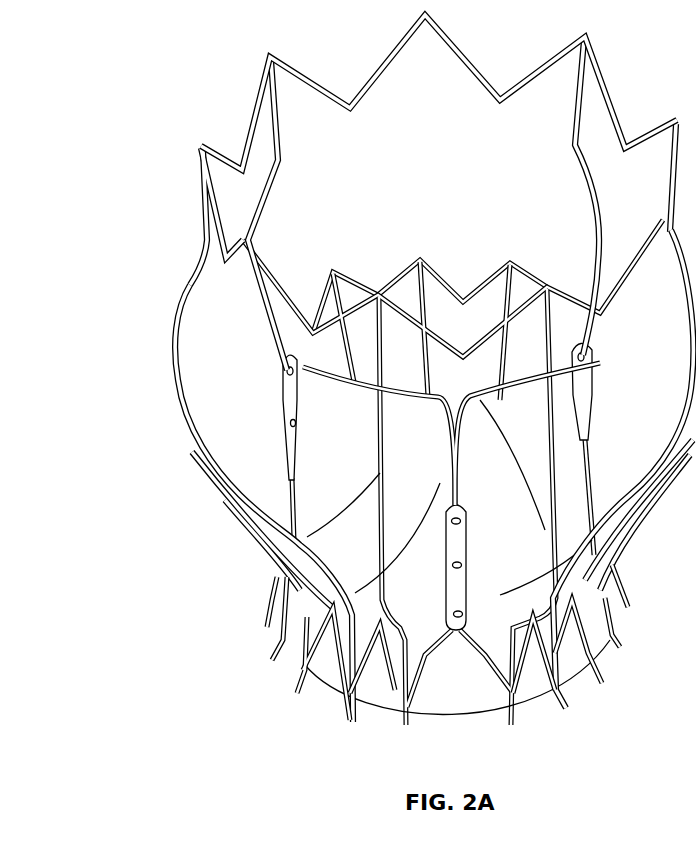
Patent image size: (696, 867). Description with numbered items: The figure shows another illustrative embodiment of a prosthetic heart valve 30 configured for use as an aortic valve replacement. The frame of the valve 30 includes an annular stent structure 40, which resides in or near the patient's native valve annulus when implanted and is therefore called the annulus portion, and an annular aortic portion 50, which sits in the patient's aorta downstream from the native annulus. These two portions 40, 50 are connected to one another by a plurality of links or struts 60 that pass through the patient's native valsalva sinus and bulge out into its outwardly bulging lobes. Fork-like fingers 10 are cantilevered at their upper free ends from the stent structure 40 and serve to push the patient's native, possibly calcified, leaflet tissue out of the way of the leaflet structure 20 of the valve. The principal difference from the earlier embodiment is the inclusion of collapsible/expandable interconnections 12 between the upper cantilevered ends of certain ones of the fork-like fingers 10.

The fork-like fingers 10 is at (327, 283).
The collapsible/expandable interconnections 12 is at (437, 272).
The leaflet structure 20 is at (320, 487).
The prosthetic heart valve 30 is at (247, 42).
The annular stent structure 40 is at (592, 640).
The annular aortic portion 50 is at (608, 97).
The links or struts 60 is at (172, 313).